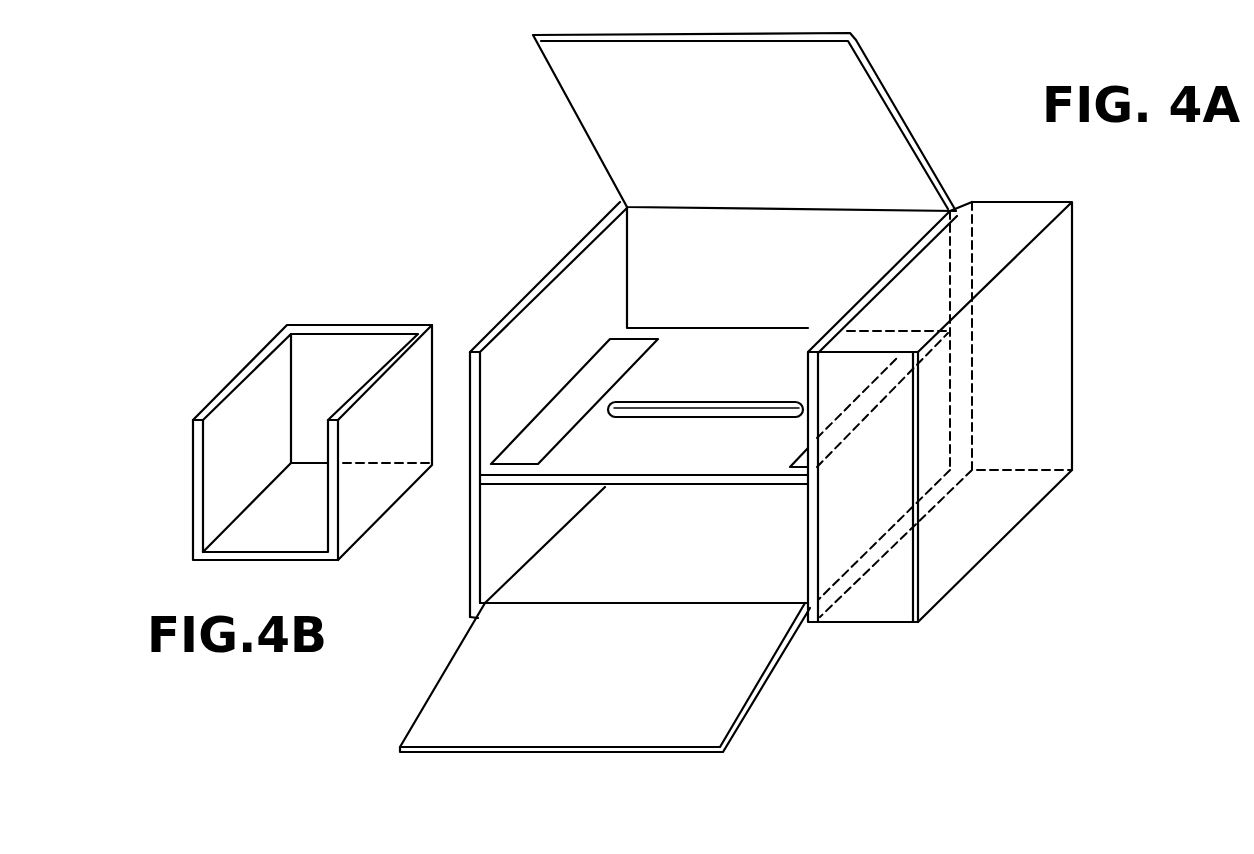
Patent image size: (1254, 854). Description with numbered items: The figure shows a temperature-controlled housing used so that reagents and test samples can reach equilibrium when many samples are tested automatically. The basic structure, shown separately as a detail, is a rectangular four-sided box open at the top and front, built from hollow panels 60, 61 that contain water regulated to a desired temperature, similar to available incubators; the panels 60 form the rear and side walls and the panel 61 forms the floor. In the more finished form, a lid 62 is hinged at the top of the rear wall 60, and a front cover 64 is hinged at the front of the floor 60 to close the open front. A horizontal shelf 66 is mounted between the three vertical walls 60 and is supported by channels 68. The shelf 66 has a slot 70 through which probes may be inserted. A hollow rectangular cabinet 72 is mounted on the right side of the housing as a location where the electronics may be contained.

In FIG. 4A, the hollow panel 60 is at (556, 266).
In FIG. 4B, the hollow panel 60 is at (318, 360).
In FIG. 4A, the hollow panel 61 is at (510, 598).
In FIG. 4B, the hollow panel 61 is at (245, 533).
In FIG. 4A, the lid 62 is at (877, 92).
In FIG. 4A, the front cover 64 is at (713, 700).
In FIG. 4A, the horizontal shelf 66 is at (553, 472).
In FIG. 4A, the channel 68 is at (536, 445).
In FIG. 4A, the slot 70 is at (667, 417).
In FIG. 4A, the hollow rectangular cabinet 72 is at (967, 552).